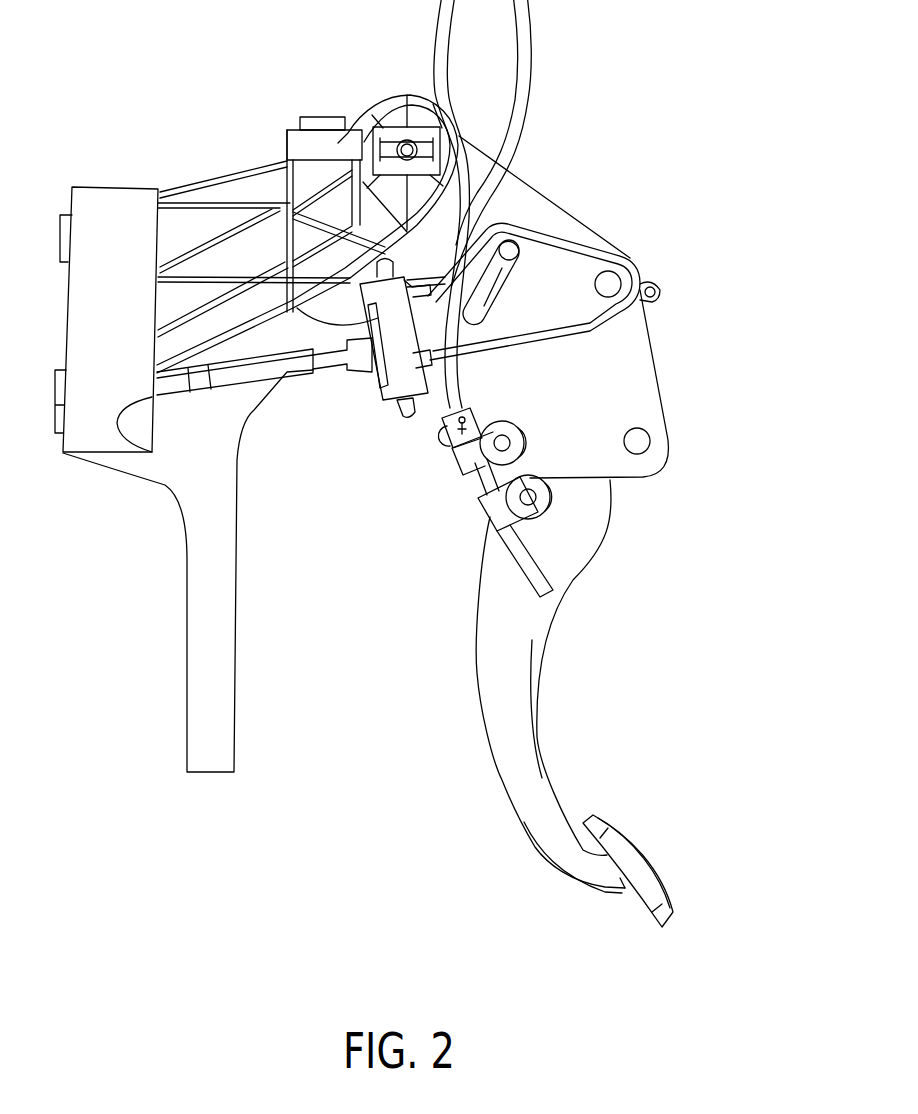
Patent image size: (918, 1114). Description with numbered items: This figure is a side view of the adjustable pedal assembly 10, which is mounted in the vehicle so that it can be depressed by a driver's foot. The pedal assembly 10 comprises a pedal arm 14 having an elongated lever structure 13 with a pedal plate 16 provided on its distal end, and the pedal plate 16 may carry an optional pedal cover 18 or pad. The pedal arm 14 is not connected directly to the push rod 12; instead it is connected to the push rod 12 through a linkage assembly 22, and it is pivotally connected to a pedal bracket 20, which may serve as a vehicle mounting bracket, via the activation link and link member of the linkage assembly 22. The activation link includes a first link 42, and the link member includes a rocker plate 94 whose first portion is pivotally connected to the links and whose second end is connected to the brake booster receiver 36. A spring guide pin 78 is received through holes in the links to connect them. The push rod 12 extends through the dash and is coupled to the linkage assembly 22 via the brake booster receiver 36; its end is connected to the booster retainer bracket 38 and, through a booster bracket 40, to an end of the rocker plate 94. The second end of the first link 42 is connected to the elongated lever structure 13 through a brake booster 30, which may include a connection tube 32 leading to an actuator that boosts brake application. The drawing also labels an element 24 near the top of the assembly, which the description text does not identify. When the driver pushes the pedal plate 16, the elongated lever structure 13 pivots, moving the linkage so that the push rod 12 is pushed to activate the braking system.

The pedal assembly 10 is at (708, 102).
The push rod 12 is at (257, 378).
The elongated lever structure 13 is at (535, 757).
The pedal arm 14 is at (477, 668).
The pedal plate 16 is at (650, 890).
The pedal cover 18 is at (650, 853).
The pedal bracket 20 is at (105, 186).
The linkage assembly 22 is at (662, 326).
The cable guide ring 24 is at (392, 98).
The brake booster 30 is at (457, 473).
The connection tube 32 is at (523, 32).
The brake booster receiver 36 is at (377, 402).
The booster retainer bracket 38 is at (398, 406).
The booster bracket 40 is at (423, 327).
The first link 42 is at (638, 380).
The spring guide pin 78 is at (645, 443).
The rocker plate 94 is at (565, 262).